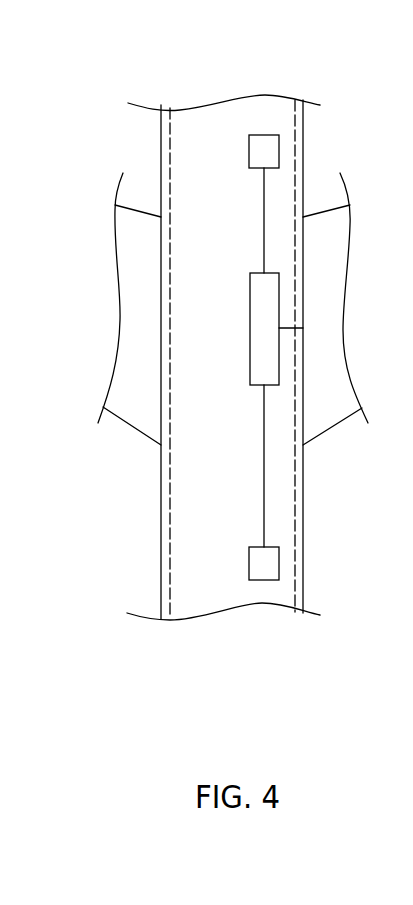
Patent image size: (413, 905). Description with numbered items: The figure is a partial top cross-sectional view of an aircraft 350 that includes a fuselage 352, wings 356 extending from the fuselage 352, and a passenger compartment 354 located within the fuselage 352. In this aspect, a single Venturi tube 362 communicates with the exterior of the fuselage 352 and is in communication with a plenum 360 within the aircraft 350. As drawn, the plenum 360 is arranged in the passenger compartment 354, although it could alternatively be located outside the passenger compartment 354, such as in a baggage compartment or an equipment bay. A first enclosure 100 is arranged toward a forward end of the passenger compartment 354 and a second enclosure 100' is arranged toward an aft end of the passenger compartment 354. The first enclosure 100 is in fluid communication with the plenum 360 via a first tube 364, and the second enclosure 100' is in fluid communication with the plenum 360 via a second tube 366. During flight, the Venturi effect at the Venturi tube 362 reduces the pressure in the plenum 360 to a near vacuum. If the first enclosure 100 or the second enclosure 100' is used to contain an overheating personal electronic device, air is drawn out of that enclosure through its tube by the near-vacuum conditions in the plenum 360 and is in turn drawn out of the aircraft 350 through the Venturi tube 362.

The aircraft 350 is at (97, 122).
The fuselage 352 is at (303, 555).
The passenger compartment 354 is at (297, 515).
The wings 356 is at (133, 410).
The plenum 360 is at (262, 327).
The Venturi tube 362 is at (288, 328).
The first tube 364 is at (264, 453).
The second tube 366 is at (262, 217).
The first enclosure 100 is at (238, 541).
The second enclosure 100' is at (233, 146).